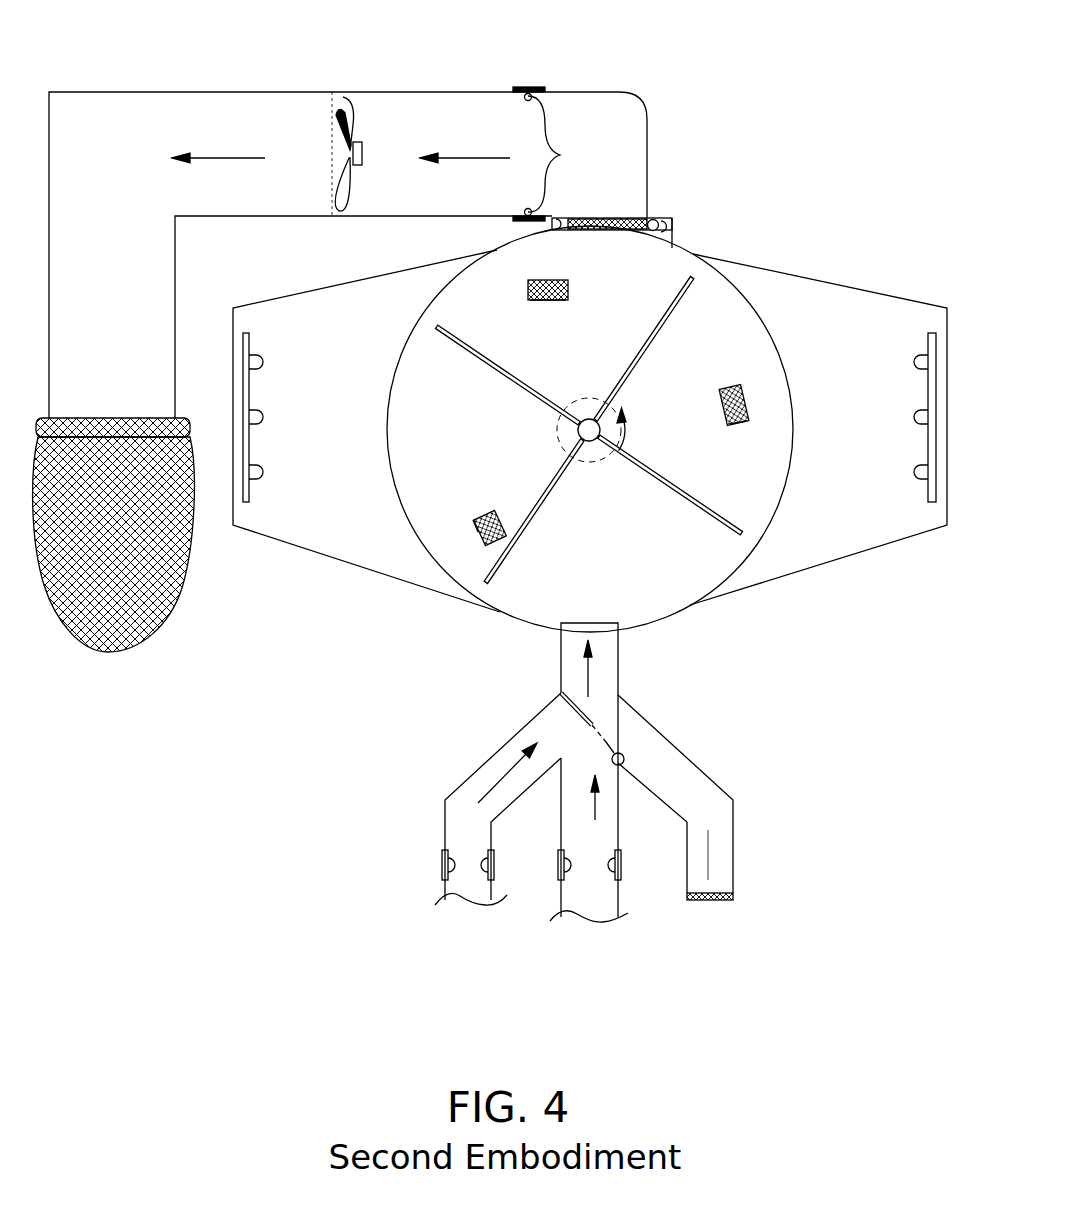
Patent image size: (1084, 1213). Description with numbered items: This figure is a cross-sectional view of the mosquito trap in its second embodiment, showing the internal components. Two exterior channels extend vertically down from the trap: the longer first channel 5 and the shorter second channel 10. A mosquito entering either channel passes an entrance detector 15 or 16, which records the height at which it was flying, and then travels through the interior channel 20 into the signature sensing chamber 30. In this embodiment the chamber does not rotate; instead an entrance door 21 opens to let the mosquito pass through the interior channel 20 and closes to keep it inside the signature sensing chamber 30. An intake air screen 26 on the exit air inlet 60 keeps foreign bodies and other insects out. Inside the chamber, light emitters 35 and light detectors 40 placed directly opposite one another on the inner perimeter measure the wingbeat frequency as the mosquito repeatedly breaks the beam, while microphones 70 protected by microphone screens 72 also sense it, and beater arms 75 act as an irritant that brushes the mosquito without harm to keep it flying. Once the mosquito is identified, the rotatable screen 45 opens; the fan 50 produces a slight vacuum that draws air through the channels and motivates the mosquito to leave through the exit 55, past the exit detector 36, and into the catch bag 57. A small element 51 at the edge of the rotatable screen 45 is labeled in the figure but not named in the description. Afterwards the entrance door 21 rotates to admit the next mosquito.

The first channel 5 is at (592, 918).
The second channel 10 is at (445, 800).
The entrance detector for the first channel 15 is at (442, 865).
The entrance detector for the second channel 16 is at (621, 866).
The interior channel 20 is at (590, 628).
The entrance door 21 is at (618, 713).
The intake air screen 26 is at (708, 900).
The signature sensing chamber 30 is at (703, 306).
The light emitter 35 is at (253, 392).
The exit detector 36 is at (565, 155).
The light detector 40 is at (928, 418).
The rotatable screen 45 is at (605, 218).
The fan 50 is at (345, 97).
The roller 51 is at (672, 217).
The exit from signature sensing chamber 55 is at (477, 130).
The catch bag 57 is at (118, 636).
The exit air inlet 60 is at (700, 793).
The microphone 70 is at (570, 287).
The microphone screen 72 is at (548, 300).
The beater arms 75 is at (572, 470).